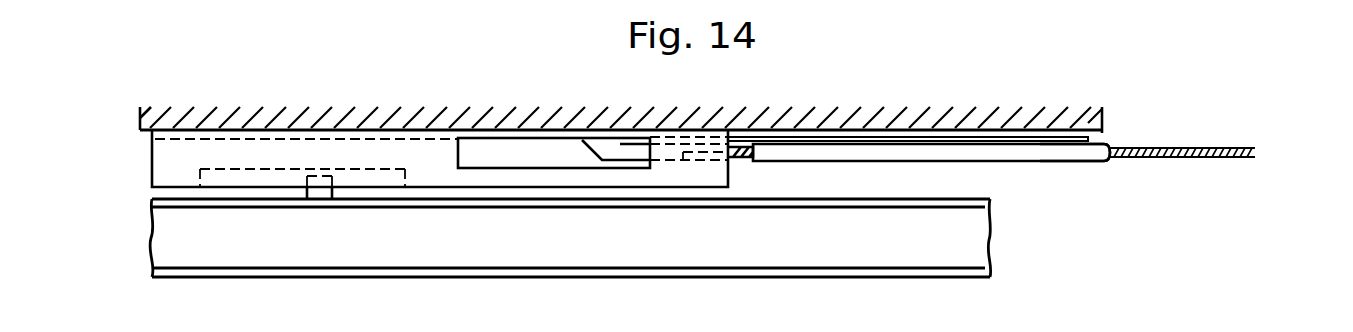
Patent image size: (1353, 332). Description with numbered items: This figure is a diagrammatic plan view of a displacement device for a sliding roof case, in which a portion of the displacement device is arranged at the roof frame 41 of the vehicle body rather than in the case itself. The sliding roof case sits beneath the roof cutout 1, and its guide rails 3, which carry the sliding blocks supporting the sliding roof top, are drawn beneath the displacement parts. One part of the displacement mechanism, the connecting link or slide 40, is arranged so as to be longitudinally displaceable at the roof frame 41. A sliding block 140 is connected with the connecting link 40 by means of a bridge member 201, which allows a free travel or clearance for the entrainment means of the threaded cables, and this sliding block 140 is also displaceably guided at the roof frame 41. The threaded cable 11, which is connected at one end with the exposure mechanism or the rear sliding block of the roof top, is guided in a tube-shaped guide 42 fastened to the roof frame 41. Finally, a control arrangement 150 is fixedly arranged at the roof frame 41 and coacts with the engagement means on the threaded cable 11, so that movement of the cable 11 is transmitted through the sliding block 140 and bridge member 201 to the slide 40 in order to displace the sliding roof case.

The roof cutout 1 is at (918, 182).
The guide rails 3 is at (933, 252).
The threaded cable 11 is at (1197, 155).
The connecting link or slide 40 is at (388, 153).
The roof frame 41 is at (837, 124).
The tube-shaped guides 42 is at (1070, 156).
The sliding block 140 is at (695, 173).
The control arrangement 150 is at (614, 150).
The bridge member 201 is at (530, 177).